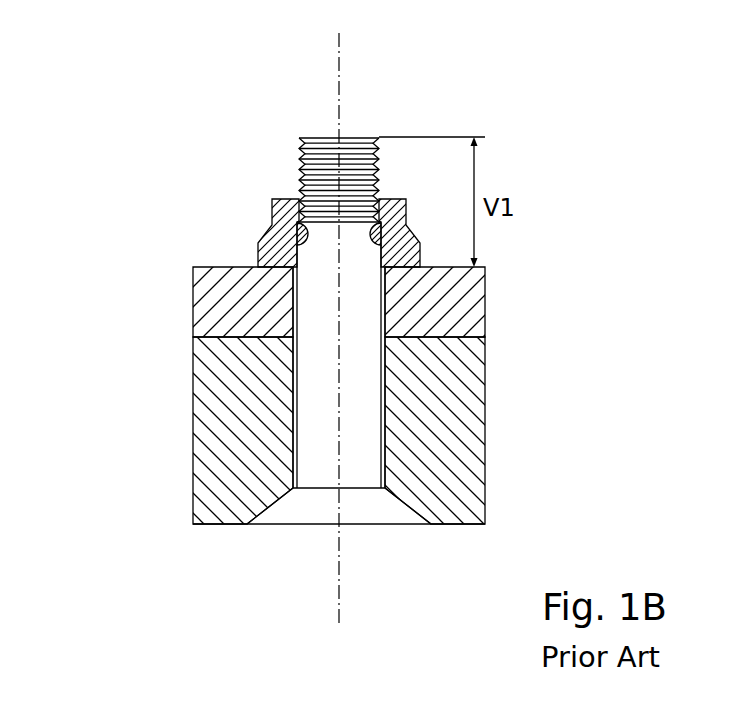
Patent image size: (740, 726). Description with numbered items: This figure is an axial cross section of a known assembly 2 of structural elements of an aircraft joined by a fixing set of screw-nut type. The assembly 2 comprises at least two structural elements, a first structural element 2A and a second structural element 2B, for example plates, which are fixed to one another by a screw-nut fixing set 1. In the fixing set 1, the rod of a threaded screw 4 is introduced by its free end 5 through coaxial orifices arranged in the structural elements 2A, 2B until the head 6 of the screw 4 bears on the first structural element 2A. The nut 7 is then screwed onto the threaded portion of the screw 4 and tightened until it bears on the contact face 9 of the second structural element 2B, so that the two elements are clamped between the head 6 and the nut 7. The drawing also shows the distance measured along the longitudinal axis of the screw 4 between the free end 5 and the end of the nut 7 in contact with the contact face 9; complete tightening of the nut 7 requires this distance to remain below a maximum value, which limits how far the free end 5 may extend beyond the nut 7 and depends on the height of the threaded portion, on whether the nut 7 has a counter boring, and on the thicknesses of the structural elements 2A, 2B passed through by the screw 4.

The screw-nut fixing set 1 is at (268, 144).
The assembly 2 is at (143, 406).
The first structural element 2A is at (468, 402).
The second structural element 2B is at (193, 298).
The threaded screw 4 is at (377, 534).
The free end 5 is at (356, 130).
The head 6 is at (303, 510).
The nut 7 is at (277, 244).
The contact face 9 is at (399, 278).